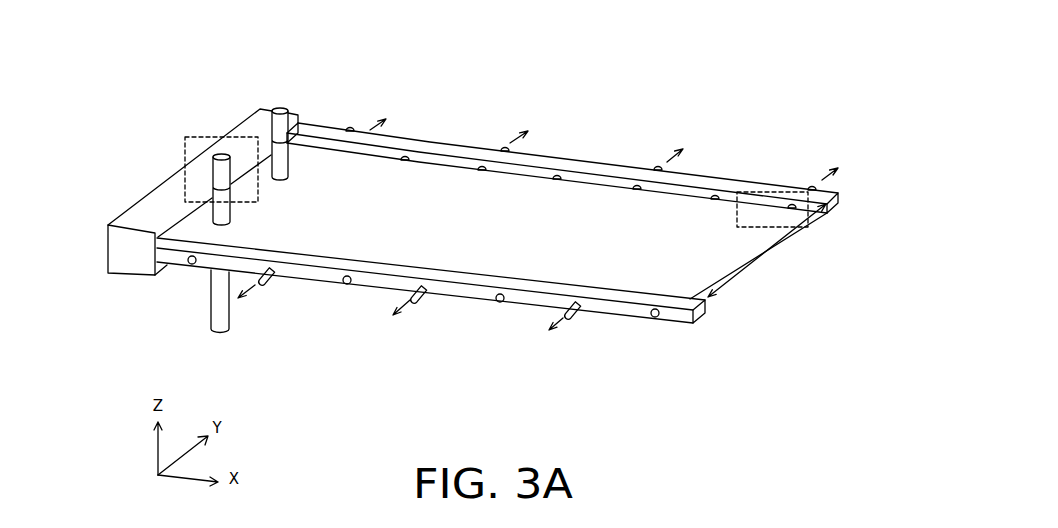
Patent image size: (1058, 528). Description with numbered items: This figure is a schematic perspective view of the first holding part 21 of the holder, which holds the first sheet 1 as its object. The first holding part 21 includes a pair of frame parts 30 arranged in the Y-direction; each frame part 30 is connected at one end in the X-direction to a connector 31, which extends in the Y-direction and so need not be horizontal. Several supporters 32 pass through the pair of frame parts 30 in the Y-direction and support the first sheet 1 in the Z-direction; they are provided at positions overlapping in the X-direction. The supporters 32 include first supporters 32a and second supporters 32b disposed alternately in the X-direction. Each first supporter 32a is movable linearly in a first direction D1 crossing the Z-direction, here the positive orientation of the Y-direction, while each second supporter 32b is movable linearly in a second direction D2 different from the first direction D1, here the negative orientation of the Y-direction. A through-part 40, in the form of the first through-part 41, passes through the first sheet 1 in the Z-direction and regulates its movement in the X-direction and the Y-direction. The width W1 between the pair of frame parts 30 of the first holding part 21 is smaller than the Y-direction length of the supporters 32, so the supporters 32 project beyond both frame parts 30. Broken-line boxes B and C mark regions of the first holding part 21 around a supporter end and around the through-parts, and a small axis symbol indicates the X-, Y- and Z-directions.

The first sheet 1 is at (573, 203).
The first holding part 21 is at (768, 115).
The frame part 30 is at (430, 145).
The connector 31 is at (147, 211).
The supporter 32 is at (488, 242).
The first supporter 32a is at (350, 128).
The second supporter 32b is at (272, 276).
The through-part 40 is at (171, 186).
The first through-part 41 is at (281, 157).
The enlarged region B is at (753, 190).
The enlarged region C is at (188, 137).
The first direction D1 is at (604, 144).
The second direction D2 is at (400, 308).
The width between the pair of frame parts of the first holding part W1 is at (767, 250).